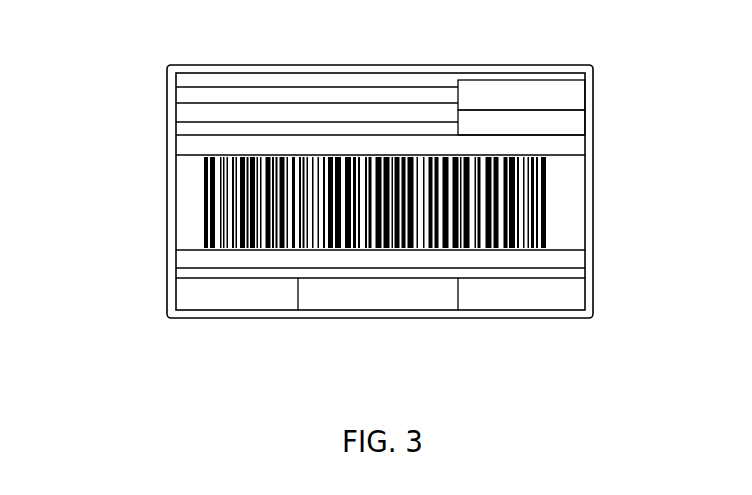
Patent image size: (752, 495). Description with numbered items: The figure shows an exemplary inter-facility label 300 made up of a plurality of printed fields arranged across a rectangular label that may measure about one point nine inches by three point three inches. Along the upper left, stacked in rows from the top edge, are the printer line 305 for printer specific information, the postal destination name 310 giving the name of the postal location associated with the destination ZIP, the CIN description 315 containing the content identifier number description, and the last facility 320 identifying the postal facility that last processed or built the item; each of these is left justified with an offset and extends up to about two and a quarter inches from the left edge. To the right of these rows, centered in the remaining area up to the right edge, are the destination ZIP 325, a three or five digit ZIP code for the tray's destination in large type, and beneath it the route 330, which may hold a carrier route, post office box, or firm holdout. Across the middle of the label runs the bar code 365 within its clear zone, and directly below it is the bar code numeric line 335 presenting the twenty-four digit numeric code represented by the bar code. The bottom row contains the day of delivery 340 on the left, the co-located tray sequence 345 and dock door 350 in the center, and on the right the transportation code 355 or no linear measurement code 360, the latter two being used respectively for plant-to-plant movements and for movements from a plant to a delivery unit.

The inter-facility label 300 is at (732, 78).
The printer line field 305 is at (188, 81).
The postal destination name field 310 is at (188, 93).
The CIN description field 315 is at (195, 110).
The last facility field 320 is at (187, 125).
The destination ZIP field 325 is at (517, 90).
The route field 330 is at (572, 122).
The bar code numeric line field 335 is at (190, 273).
The day of delivery field 340 is at (188, 298).
The tray sequence field 345 is at (333, 302).
The dock door field 350 is at (448, 295).
The transportation code field 355 is at (515, 298).
The no linear measurement code field 360 is at (578, 295).
The bar code 365 is at (533, 210).